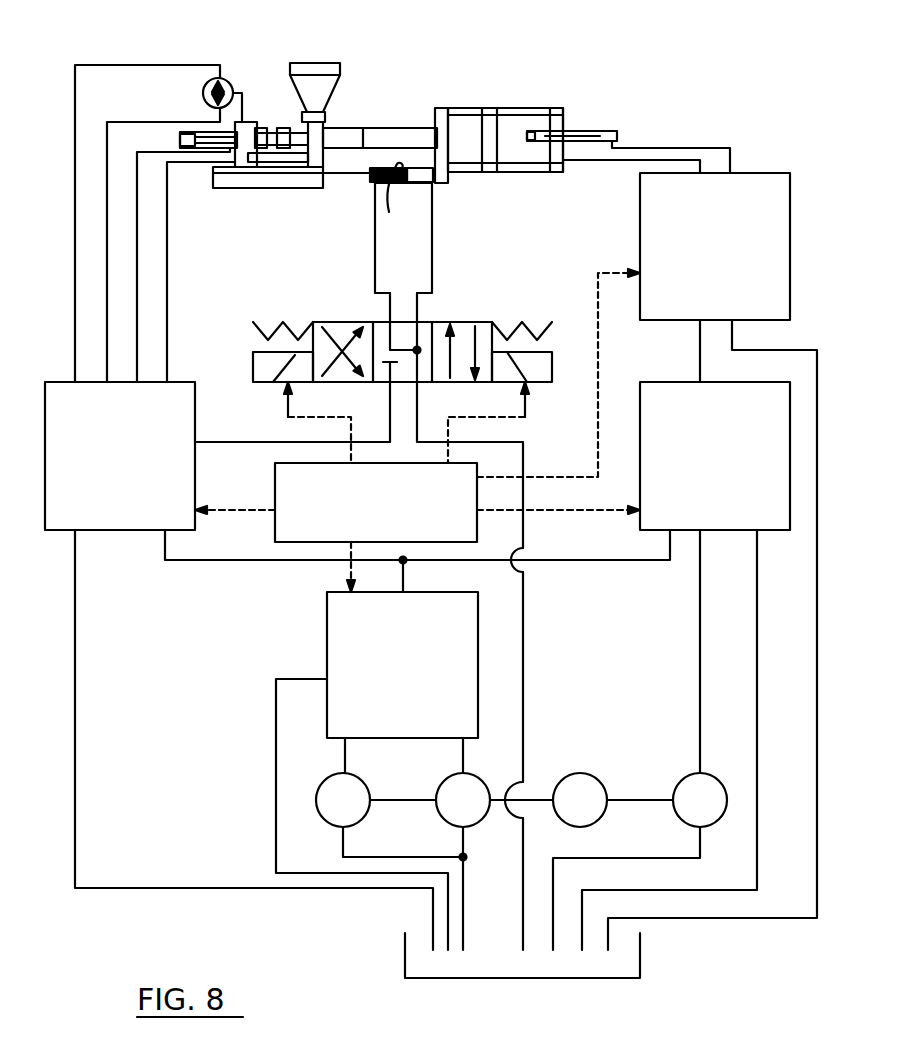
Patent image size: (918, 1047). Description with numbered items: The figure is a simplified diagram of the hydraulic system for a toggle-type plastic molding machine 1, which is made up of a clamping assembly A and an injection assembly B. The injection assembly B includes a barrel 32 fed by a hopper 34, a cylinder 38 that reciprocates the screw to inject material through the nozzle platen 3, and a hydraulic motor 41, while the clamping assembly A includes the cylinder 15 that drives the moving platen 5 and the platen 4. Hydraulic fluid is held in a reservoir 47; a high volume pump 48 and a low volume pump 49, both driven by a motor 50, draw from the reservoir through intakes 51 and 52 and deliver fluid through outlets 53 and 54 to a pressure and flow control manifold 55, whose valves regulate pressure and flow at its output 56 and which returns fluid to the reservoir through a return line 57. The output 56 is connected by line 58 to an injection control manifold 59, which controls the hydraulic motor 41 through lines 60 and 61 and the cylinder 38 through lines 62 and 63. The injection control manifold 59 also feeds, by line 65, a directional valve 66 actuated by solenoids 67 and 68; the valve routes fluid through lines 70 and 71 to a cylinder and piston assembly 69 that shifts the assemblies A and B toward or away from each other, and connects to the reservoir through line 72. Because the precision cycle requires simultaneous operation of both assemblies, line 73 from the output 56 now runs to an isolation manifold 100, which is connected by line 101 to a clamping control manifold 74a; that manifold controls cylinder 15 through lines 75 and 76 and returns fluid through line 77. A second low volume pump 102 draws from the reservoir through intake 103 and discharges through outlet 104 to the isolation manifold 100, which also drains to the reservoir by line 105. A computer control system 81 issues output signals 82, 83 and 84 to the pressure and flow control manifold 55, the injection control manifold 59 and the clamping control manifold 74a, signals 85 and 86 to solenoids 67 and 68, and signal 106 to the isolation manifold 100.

The toggle-type plastic molding machine 1 is at (380, 120).
The nozzle platen 3 is at (441, 108).
The rear platen 4 is at (557, 108).
The moving platen 5 is at (490, 108).
The cylinder 15 is at (596, 132).
The barrel 32 is at (403, 126).
The hopper 34 is at (326, 100).
The cylinder 38 is at (180, 136).
The hydraulic motor 41 is at (226, 79).
The reservoir 47 is at (645, 948).
The high volume pump 48 is at (478, 826).
The low volume pump 49 is at (335, 826).
The motor 50 is at (562, 824).
The pump intake connection 51 is at (463, 921).
The pump intake connection 52 is at (413, 857).
The pump outlet connection 53 is at (463, 752).
The pump outlet connection 54 is at (345, 752).
The pressure and flow control manifold 55 is at (327, 636).
The output 56 is at (405, 577).
The return line 57 is at (275, 735).
The connection line 58 is at (230, 565).
The injection control manifold 59 is at (195, 475).
The connection line 60 is at (75, 155).
The connection line 61 is at (107, 200).
The connection line 62 is at (137, 212).
The connection line 63 is at (167, 243).
The connection line 65 is at (207, 440).
The directional valve 66 is at (460, 322).
The solenoid 67 is at (540, 352).
The solenoid 68 is at (255, 352).
The cylinder and piston assembly 69 is at (402, 195).
The connection line 70 is at (375, 235).
The connection line 71 is at (432, 210).
The connection line 72 is at (525, 663).
The connection line 73 is at (535, 558).
The clamping control manifold 74a is at (750, 186).
The connection line 75 is at (612, 165).
The connection line 76 is at (668, 148).
The connection line 77 is at (817, 605).
The computer control system 81 is at (430, 537).
The output signal 82 is at (353, 565).
The output signal 83 is at (225, 513).
The output signal 84 is at (598, 348).
The output signal 85 is at (486, 418).
The output signal 86 is at (322, 418).
The isolation manifold 100 is at (760, 533).
The connection line 101 is at (700, 366).
The second low volume pump 102 is at (703, 828).
The pump intake connection 103 is at (583, 858).
The pump outlet connection 104 is at (700, 634).
The line 105 is at (757, 661).
The output signal 106 is at (582, 516).
The clamping assembly A is at (484, 175).
The injection assembly B is at (285, 193).